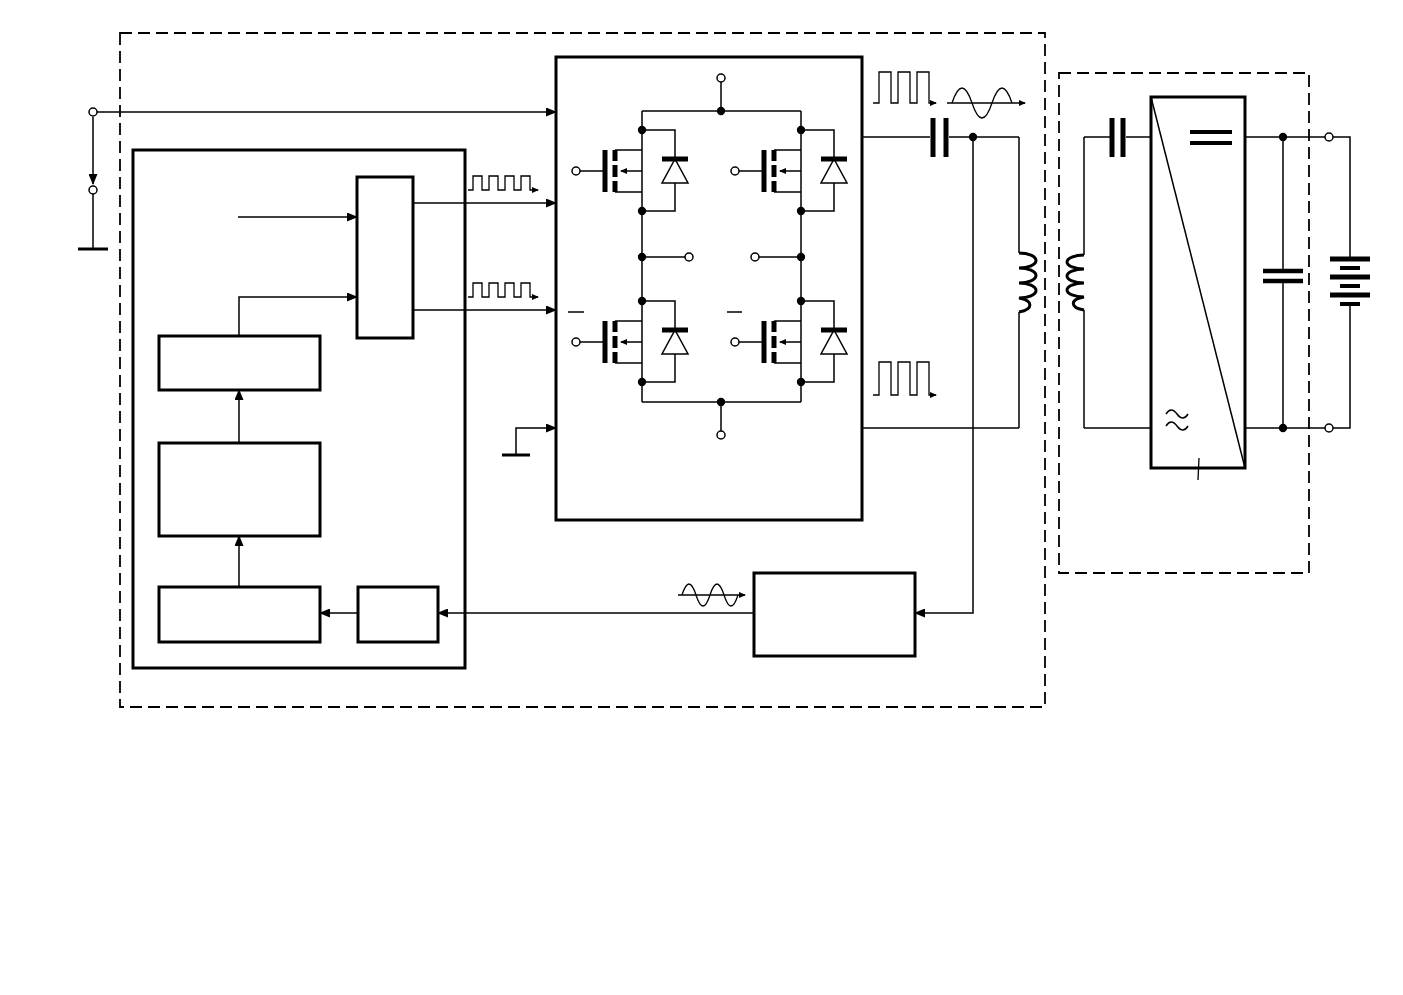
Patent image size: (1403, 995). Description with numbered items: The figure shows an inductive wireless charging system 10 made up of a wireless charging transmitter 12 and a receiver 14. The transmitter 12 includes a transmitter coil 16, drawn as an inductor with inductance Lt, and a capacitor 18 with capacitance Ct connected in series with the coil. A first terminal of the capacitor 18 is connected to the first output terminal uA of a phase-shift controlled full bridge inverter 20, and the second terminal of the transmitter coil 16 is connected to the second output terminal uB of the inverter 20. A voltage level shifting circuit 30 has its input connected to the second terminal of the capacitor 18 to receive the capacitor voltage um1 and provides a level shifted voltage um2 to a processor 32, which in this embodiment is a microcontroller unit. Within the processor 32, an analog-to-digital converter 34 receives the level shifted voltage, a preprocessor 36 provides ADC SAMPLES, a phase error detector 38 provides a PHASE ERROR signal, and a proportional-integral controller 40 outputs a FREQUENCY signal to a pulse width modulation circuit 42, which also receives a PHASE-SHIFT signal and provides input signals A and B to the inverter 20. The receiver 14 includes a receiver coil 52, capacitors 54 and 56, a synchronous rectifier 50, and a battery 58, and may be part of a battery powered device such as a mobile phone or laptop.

The inductive wireless charging system 10 is at (597, 786).
The wireless charging transmitter 12 is at (362, 707).
The receiver 14 is at (1200, 573).
The transmitter coil 16 is at (1019, 312).
The capacitor 18 is at (938, 157).
The phase-shift controlled full bridge inverter 20 is at (862, 477).
The voltage level shifting circuit 30 is at (885, 573).
The processor 32 is at (465, 550).
The analog-to-digital converter 34 is at (417, 587).
The preprocessor 36 is at (185, 587).
The phase error detector 38 is at (320, 484).
The proportional-integral controller 40 is at (185, 336).
The pulse width modulation circuit 42 is at (385, 338).
The synchronous rectifier 50 is at (1151, 456).
The receiver coil 52 is at (1084, 310).
The capacitor 54 is at (1117, 157).
The capacitor 56 is at (1275, 281).
The battery 58 is at (1345, 259).